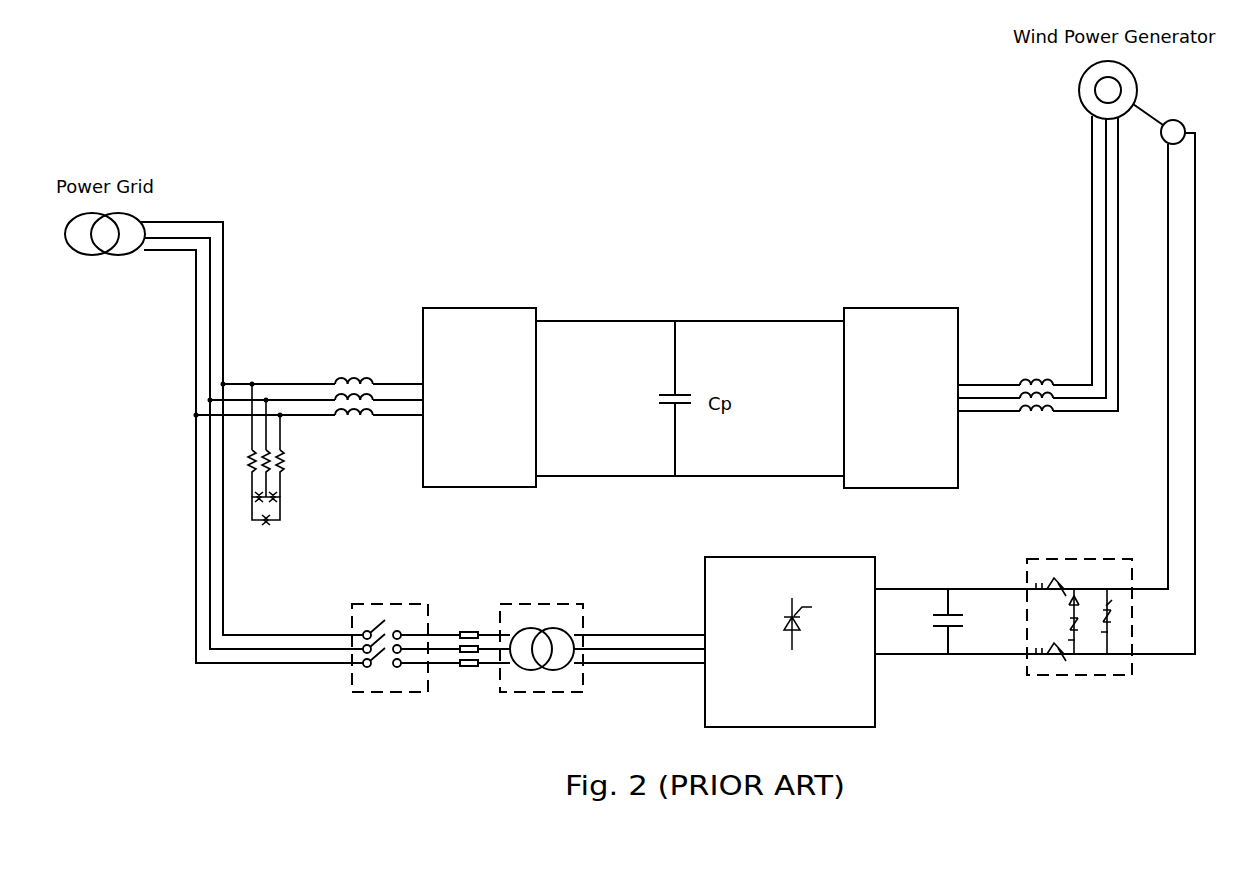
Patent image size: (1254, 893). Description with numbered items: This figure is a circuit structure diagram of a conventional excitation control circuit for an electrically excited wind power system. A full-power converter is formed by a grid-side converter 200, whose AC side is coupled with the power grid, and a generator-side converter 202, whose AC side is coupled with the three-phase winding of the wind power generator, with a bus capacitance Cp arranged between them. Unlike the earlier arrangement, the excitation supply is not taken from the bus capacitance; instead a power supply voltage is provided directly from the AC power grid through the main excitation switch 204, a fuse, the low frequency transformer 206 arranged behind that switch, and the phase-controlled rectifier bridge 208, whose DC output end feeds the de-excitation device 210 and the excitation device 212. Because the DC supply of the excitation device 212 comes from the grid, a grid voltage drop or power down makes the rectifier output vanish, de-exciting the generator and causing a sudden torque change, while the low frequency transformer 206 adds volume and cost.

The grid-side converter 200 is at (475, 308).
The generator-side converter 202 is at (903, 308).
The main excitation switch 204 is at (392, 604).
The low frequency transformer 206 is at (548, 604).
The phase-controlled rectifier bridge 208 is at (793, 557).
The de-excitation device 210 is at (1080, 559).
The excitation device 212 is at (1181, 121).